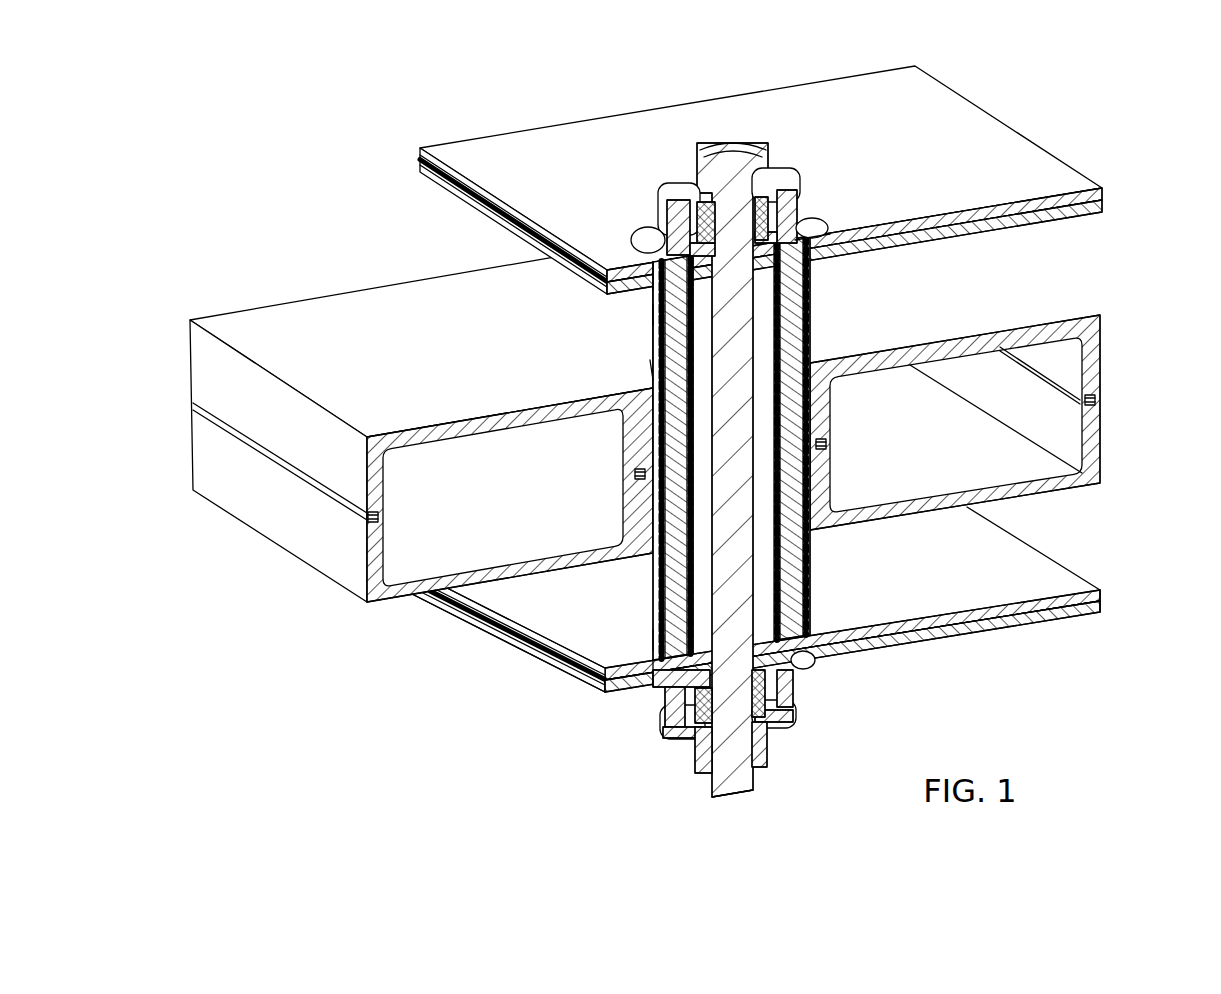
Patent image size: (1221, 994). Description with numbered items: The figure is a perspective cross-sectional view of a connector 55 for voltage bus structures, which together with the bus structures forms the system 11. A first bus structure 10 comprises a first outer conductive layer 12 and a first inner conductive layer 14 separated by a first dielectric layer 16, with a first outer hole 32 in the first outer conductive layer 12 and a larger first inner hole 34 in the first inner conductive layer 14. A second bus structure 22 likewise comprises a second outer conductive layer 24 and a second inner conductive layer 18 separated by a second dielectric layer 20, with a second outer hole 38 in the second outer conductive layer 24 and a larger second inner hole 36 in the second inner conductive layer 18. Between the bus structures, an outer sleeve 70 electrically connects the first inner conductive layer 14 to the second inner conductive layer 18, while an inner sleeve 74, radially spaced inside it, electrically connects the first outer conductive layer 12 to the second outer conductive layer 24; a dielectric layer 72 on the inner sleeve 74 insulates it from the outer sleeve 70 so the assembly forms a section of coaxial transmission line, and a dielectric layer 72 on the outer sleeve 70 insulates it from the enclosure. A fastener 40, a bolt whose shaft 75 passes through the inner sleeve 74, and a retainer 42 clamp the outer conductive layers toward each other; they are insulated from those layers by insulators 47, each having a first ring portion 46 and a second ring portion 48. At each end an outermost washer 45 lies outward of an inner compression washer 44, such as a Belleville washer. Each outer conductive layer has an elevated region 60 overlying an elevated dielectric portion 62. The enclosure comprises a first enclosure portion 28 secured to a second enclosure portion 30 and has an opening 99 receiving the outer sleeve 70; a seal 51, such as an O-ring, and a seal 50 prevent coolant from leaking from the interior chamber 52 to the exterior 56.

The first bus structure 10 is at (1040, 106).
The system 11 is at (209, 748).
The first outer conductive layer 12 is at (928, 120).
The first inner conductive layer 14 is at (1045, 220).
The first dielectric layer 16 is at (1102, 200).
The second inner conductive layer 18 is at (1010, 560).
The second dielectric layer 20 is at (1105, 600).
The second bus structure 22 is at (1118, 582).
The second outer conductive layer 24 is at (1025, 622).
The first enclosure portion 28 is at (366, 315).
The second enclosure portion 30 is at (295, 515).
The first outer hole 32 is at (800, 240).
The first inner hole 34 is at (655, 318).
The second inner hole 36 is at (665, 640).
The second outer hole 38 is at (678, 712).
The fastener 40 is at (737, 150).
The retainer 42 is at (758, 795).
The compression washer 44 is at (768, 195).
The outermost washer 45 is at (695, 190).
The first ring portion 46 is at (672, 215).
The insulators 47 is at (648, 192).
The second ring portion 48 is at (757, 205).
The seal 50 is at (378, 517).
The seal 51 is at (630, 478).
The interior chamber 52 is at (483, 528).
The connector 55 is at (572, 612).
The exterior 56 is at (255, 322).
The elevated region 60 is at (643, 240).
The elevated dielectric portion 62 is at (655, 270).
The outer sleeve 70 is at (703, 350).
The dielectric layer 72 is at (800, 300).
The inner sleeve 74 is at (655, 380).
The shaft 75 is at (722, 426).
The opening 99 is at (650, 368).